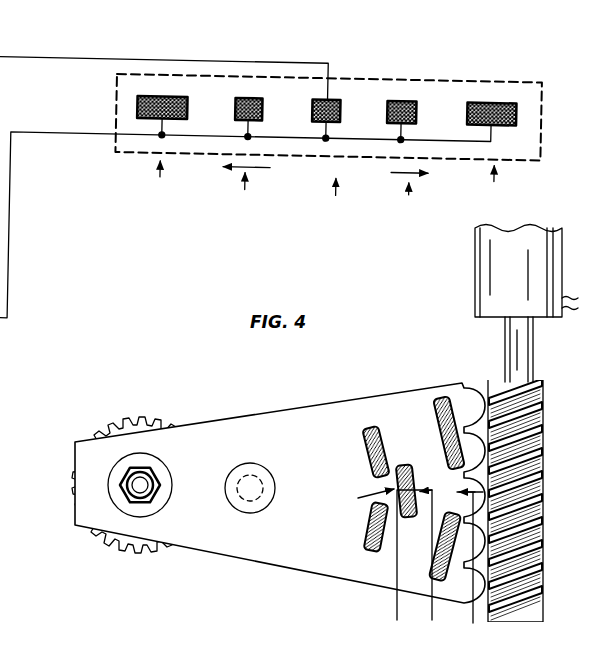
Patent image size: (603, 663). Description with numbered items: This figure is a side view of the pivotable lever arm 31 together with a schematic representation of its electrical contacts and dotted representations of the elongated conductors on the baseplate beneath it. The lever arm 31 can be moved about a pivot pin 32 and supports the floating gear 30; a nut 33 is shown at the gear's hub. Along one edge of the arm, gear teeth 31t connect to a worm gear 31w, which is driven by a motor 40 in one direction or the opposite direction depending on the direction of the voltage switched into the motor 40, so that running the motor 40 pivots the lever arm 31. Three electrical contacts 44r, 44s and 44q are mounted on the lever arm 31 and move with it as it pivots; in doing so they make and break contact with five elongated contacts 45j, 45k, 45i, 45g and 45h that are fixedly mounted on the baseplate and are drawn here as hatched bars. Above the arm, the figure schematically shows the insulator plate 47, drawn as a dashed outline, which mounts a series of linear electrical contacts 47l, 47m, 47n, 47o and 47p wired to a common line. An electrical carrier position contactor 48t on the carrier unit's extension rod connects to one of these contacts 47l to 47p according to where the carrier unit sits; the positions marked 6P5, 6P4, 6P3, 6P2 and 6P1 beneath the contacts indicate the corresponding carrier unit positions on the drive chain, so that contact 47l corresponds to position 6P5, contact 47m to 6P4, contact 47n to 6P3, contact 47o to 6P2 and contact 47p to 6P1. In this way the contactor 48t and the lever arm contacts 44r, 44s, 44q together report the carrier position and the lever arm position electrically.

The floating gear 30 is at (143, 425).
The pivotable lever arm 31 is at (281, 566).
The gear teeth 31t is at (466, 400).
The worm gear 31w is at (515, 500).
The pivot pin 32 is at (252, 472).
The pivot nut 33 is at (148, 500).
The motor 40 is at (485, 287).
The electrical contact 44q is at (545, 492).
The electrical contact 44r is at (358, 501).
The electrical contact 44s is at (432, 490).
The elongated contact 45g is at (433, 396).
The elongated contact 45h is at (452, 585).
The elongated contact 45i is at (404, 518).
The elongated contact 45j is at (366, 440).
The elongated contact 45k is at (366, 530).
The insulator plate 47 is at (542, 96).
The electrical contact 47l is at (138, 105).
The electrical contact 47m is at (249, 95).
The electrical contact 47n is at (316, 112).
The electrical contact 47o is at (402, 95).
The electrical contact 47p is at (492, 95).
The electrical carrier position contactor 48t is at (328, 92).
The carrier unit position 6P1 is at (487, 189).
The carrier unit position 6P2 is at (407, 200).
The carrier unit position 6P3 is at (327, 203).
The carrier unit position 6P4 is at (241, 192).
The carrier unit position 6P5 is at (151, 186).